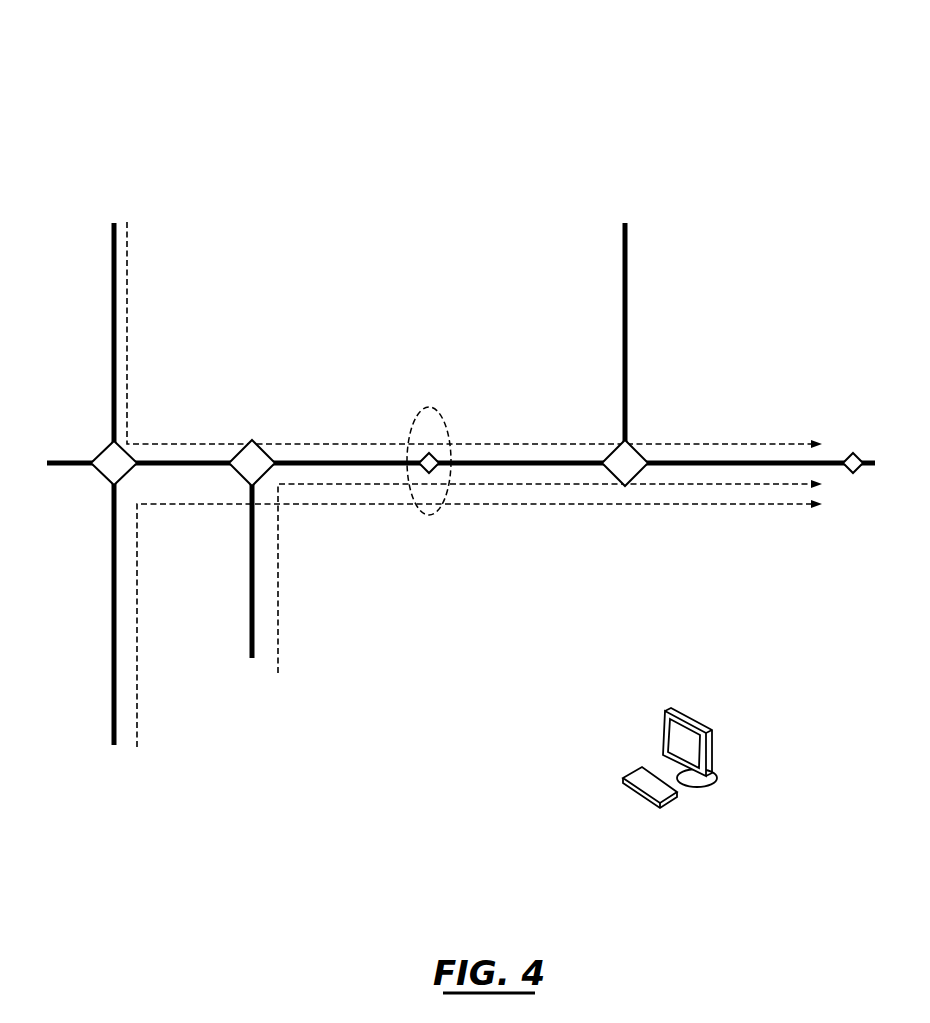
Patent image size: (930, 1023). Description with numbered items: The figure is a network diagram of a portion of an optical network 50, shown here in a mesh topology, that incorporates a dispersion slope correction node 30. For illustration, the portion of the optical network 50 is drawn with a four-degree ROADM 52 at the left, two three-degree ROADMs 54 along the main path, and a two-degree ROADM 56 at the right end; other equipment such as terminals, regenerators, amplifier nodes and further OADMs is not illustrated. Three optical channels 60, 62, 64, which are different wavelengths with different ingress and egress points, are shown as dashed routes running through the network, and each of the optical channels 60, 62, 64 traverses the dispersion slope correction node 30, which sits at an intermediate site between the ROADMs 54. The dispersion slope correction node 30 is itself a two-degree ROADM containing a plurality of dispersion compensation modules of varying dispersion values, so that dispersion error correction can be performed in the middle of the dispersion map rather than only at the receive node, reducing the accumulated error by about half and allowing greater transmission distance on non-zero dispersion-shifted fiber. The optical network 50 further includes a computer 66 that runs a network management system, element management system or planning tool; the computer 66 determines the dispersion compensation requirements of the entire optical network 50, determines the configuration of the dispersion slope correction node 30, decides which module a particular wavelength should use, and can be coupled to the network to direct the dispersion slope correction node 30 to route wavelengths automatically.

The optical network 50 is at (699, 95).
The four-degree ROADM 52 is at (102, 477).
The three-degree ROADM 54 is at (262, 445).
The two-degree ROADM 56 is at (852, 473).
The optical channel 60 is at (187, 442).
The optical channel 62 is at (137, 660).
The optical channel 64 is at (277, 662).
The dispersion slope correction node 30 is at (438, 408).
The computer 66 is at (693, 717).